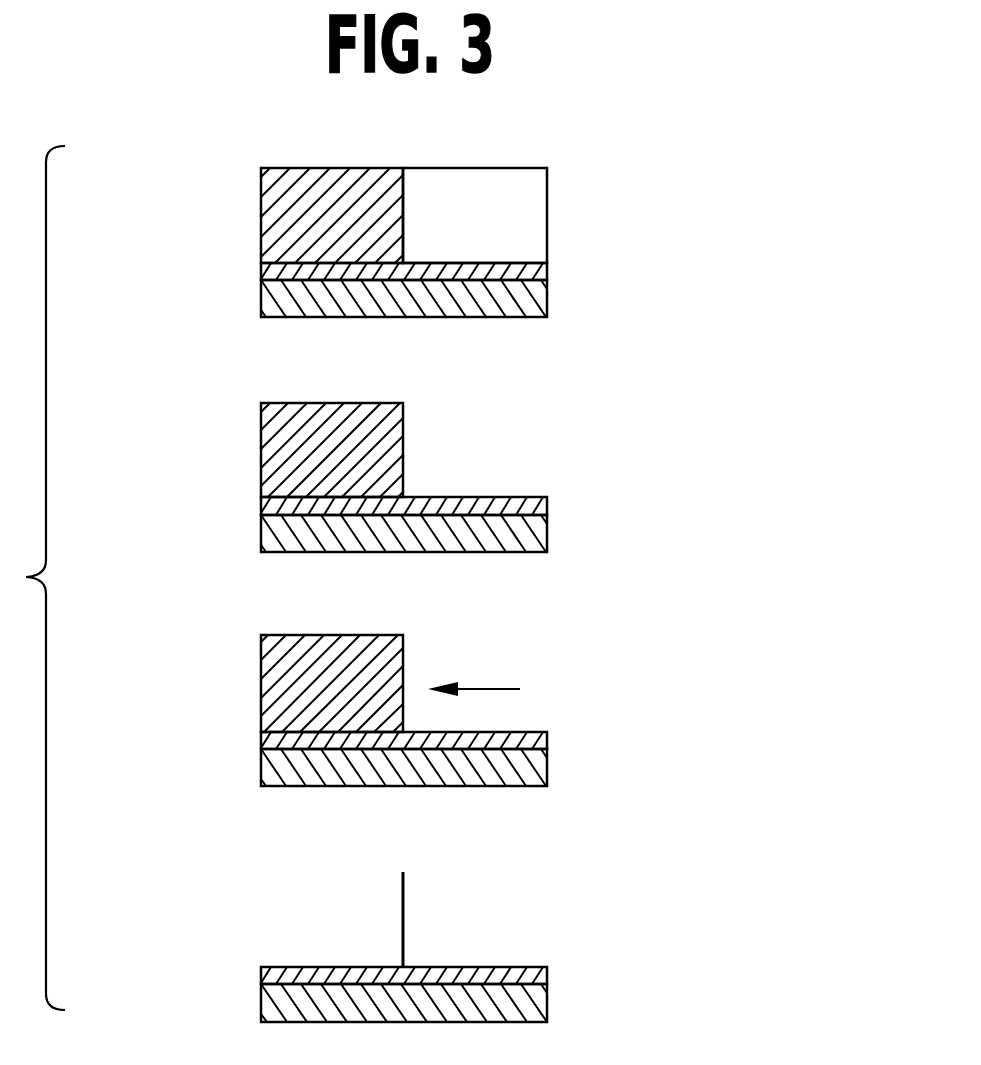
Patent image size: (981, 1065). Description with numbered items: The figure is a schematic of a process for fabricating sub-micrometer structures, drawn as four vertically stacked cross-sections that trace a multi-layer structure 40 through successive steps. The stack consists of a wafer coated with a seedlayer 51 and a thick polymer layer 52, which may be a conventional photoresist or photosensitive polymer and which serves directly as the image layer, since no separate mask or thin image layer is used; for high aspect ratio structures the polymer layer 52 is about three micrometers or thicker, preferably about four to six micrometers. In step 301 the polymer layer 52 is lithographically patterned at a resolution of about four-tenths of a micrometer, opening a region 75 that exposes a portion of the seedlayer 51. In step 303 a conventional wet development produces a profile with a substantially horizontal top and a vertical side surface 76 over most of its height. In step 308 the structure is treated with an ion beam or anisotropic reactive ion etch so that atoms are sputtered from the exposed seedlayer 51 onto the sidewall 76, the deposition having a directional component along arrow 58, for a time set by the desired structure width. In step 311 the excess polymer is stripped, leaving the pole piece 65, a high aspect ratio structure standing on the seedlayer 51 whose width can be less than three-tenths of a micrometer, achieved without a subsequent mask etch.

The layered structure / workpiece 40 is at (292, 145).
The lithographic patterning step 301 is at (168, 206).
The polymer layer 52 is at (261, 195).
The exposed region of resist 75 is at (547, 188).
The seedlayer 51 is at (261, 268).
The wet development step 303 is at (168, 442).
The vertical side surface 76 is at (403, 438).
The ion beam sputtering step 308 is at (168, 694).
The arrow 58 is at (460, 688).
The polymer stripping step 311 is at (168, 914).
The pole piece 65 is at (403, 905).